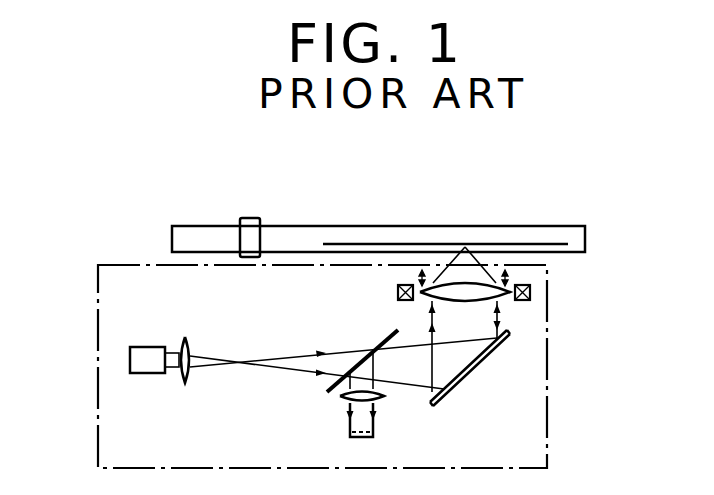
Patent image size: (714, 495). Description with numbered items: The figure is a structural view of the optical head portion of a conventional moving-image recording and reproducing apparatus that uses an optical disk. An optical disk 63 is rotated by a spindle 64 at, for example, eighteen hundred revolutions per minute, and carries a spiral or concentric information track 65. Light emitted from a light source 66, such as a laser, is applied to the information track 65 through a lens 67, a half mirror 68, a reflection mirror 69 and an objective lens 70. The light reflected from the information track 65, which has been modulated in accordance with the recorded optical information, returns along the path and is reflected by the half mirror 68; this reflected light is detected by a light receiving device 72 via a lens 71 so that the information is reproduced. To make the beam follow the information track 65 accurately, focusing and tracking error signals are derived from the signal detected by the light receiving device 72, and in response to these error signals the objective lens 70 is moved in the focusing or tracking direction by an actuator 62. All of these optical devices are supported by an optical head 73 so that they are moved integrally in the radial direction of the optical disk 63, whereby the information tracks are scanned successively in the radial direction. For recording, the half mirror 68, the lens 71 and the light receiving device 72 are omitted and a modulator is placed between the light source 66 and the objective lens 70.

The actuator 62 is at (531, 292).
The optical disk 63 is at (346, 225).
The spindle 64 is at (250, 217).
The information track 65 is at (433, 242).
The light source 66 is at (148, 346).
The lens 67 is at (191, 340).
The half mirror 68 is at (393, 333).
The reflection mirror 69 is at (484, 356).
The objective lens 70 is at (500, 302).
The lens 71 is at (340, 400).
The light receiving device 72 is at (348, 437).
The optical head 73 is at (97, 283).